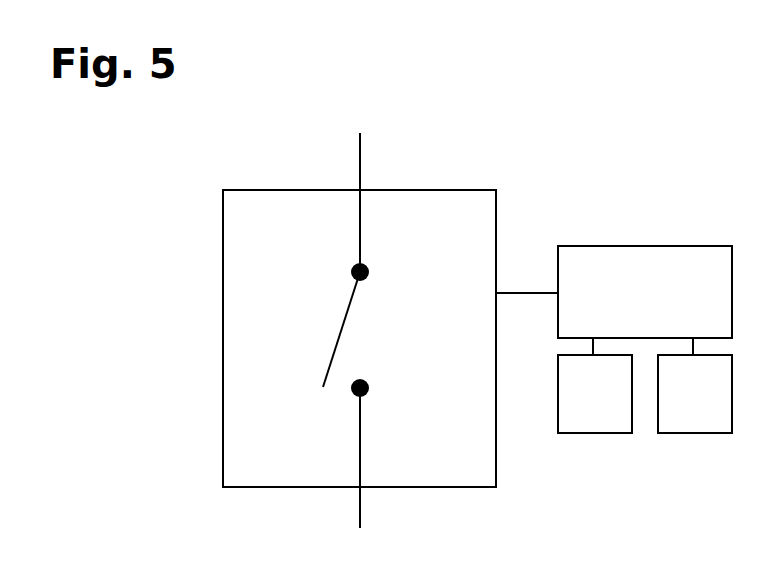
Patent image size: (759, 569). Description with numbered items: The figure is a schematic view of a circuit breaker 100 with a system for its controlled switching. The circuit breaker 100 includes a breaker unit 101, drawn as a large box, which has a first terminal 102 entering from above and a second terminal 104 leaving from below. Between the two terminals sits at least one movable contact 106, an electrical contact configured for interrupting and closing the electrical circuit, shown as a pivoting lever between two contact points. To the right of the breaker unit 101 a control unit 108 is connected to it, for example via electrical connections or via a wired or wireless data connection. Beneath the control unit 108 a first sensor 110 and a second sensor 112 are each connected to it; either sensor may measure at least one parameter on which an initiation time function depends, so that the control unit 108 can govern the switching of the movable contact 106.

The circuit breaker 100 is at (140, 175).
The breaker unit 101 is at (221, 415).
The first terminal 102 is at (358, 152).
The second terminal 104 is at (356, 517).
The movable contact 106 is at (326, 369).
The control unit 108 is at (620, 309).
The first sensor 110 is at (572, 406).
The second sensor 112 is at (673, 406).